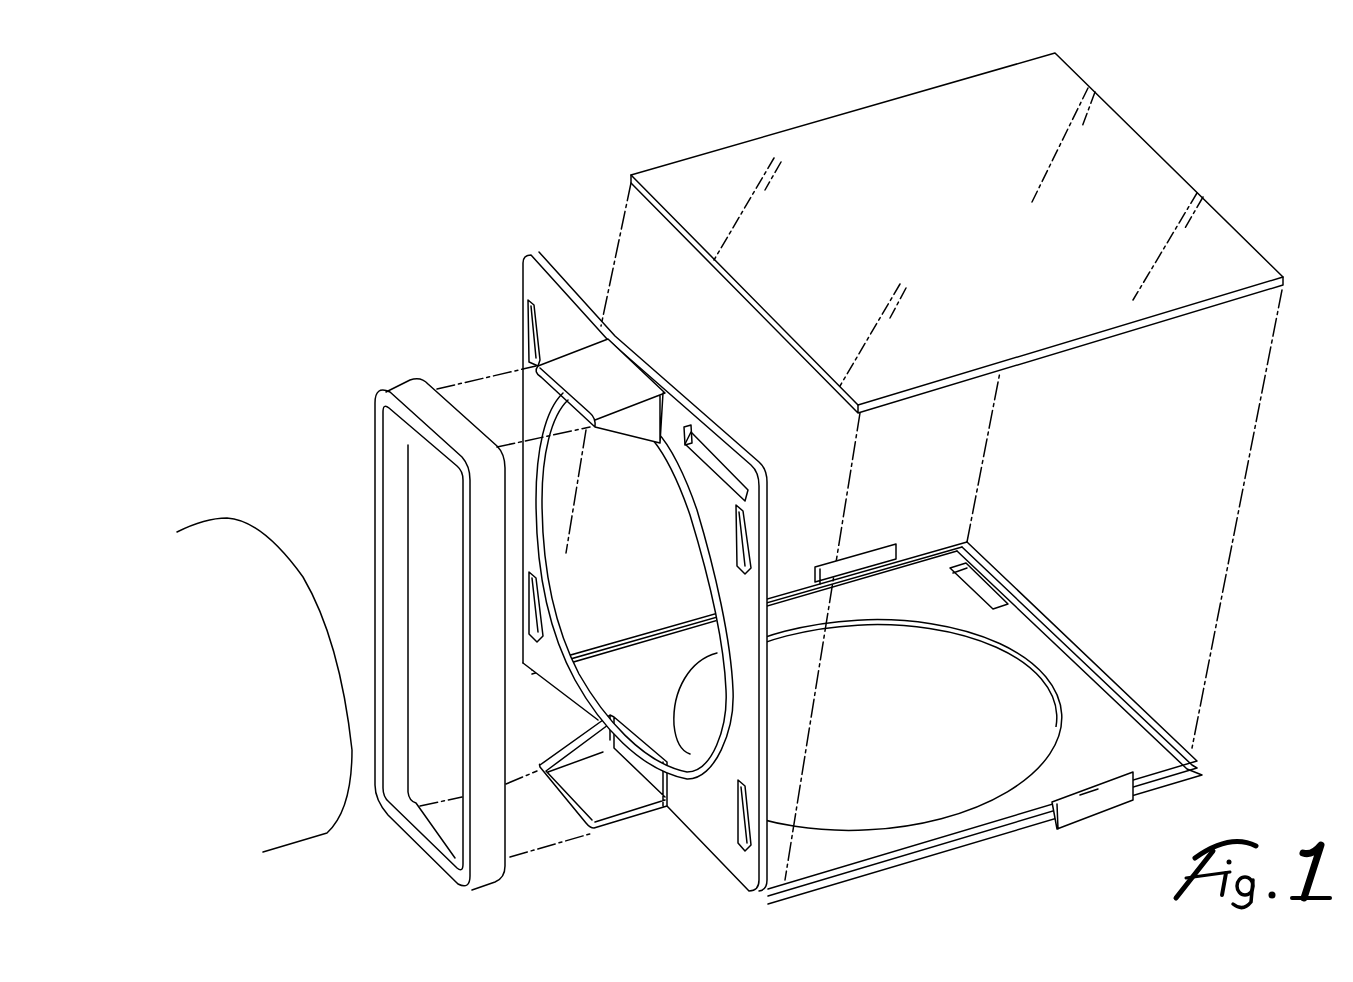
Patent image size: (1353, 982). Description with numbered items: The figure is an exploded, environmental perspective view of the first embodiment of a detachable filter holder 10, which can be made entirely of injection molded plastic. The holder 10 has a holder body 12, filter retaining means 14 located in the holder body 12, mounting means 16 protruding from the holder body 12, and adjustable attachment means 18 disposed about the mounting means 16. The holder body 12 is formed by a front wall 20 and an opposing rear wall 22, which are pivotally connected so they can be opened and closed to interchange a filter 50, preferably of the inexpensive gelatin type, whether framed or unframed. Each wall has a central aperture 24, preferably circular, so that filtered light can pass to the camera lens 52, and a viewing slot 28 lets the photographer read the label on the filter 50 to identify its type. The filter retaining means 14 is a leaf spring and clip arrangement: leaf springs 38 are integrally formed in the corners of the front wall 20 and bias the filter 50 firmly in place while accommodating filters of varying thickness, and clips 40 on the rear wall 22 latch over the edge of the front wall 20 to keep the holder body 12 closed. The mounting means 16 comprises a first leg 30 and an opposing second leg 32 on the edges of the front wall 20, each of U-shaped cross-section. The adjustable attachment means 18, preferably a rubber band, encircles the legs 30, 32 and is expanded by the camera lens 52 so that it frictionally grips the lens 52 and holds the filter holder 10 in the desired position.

The detachable filter holder 10 is at (515, 183).
The holder body 12 is at (942, 466).
The filter retaining means 14 is at (761, 578).
The mounting means 16 is at (644, 577).
The adjustable attachment means 18 is at (375, 547).
The front wall 20 is at (745, 571).
The rear wall 22 is at (867, 723).
The central aperture 24 is at (1045, 673).
The viewing slot 28 is at (980, 592).
The first leg 30 is at (611, 392).
The second leg 32 is at (598, 798).
The leaf spring 38 is at (740, 806).
The clip 40 is at (1093, 820).
The filter 50 is at (951, 232).
The camera lens 52 is at (272, 687).